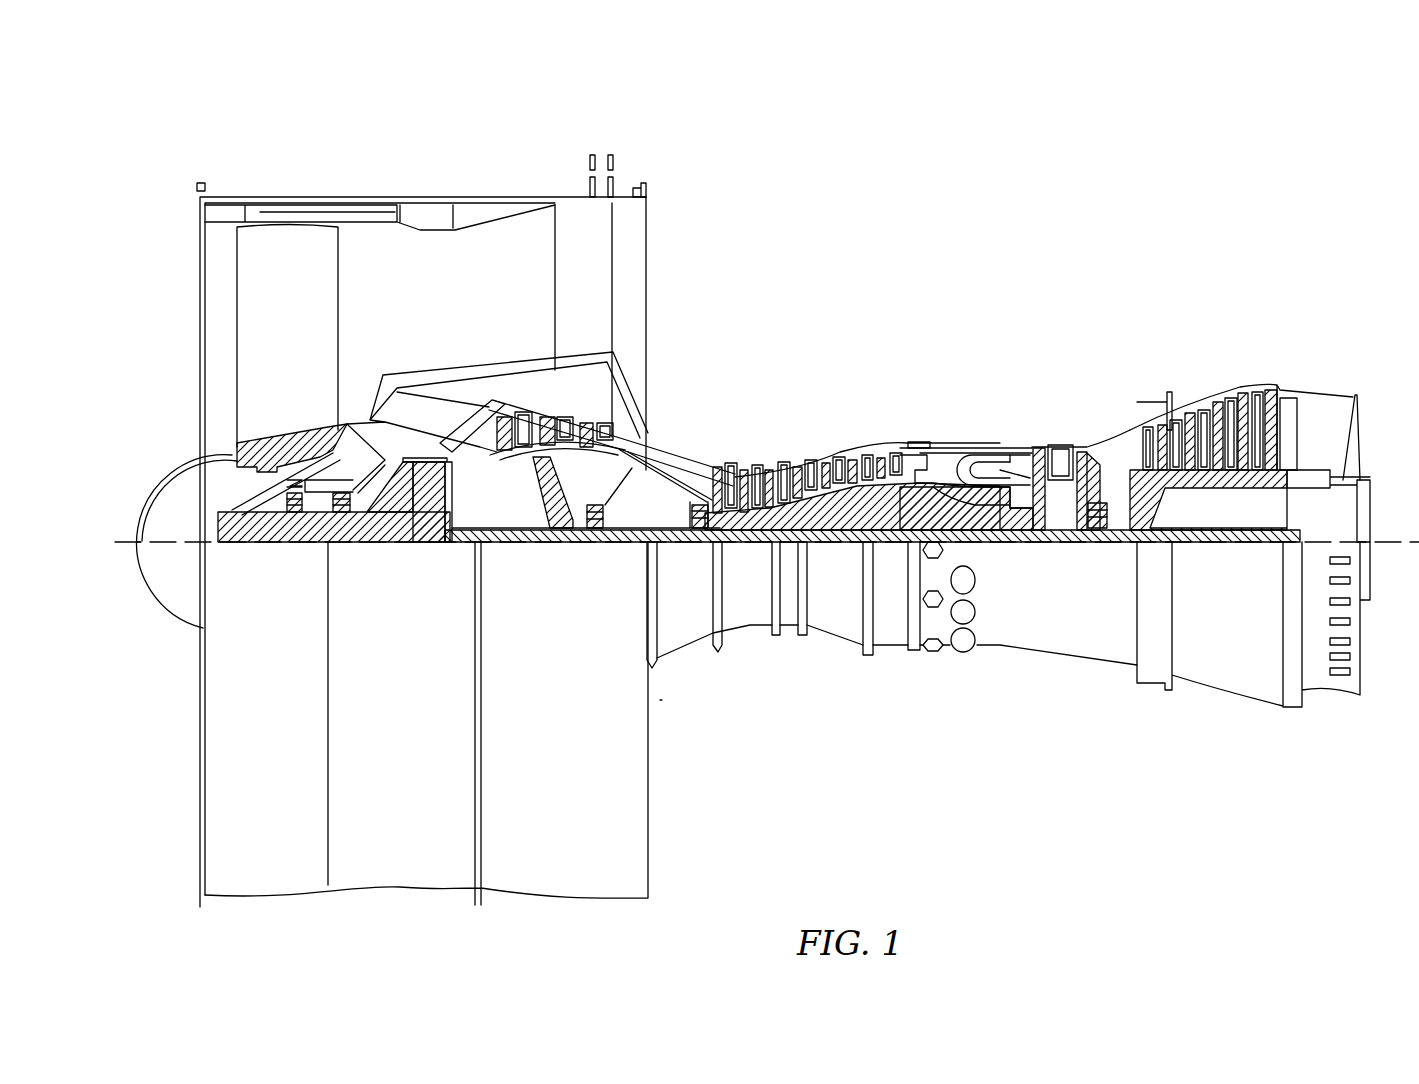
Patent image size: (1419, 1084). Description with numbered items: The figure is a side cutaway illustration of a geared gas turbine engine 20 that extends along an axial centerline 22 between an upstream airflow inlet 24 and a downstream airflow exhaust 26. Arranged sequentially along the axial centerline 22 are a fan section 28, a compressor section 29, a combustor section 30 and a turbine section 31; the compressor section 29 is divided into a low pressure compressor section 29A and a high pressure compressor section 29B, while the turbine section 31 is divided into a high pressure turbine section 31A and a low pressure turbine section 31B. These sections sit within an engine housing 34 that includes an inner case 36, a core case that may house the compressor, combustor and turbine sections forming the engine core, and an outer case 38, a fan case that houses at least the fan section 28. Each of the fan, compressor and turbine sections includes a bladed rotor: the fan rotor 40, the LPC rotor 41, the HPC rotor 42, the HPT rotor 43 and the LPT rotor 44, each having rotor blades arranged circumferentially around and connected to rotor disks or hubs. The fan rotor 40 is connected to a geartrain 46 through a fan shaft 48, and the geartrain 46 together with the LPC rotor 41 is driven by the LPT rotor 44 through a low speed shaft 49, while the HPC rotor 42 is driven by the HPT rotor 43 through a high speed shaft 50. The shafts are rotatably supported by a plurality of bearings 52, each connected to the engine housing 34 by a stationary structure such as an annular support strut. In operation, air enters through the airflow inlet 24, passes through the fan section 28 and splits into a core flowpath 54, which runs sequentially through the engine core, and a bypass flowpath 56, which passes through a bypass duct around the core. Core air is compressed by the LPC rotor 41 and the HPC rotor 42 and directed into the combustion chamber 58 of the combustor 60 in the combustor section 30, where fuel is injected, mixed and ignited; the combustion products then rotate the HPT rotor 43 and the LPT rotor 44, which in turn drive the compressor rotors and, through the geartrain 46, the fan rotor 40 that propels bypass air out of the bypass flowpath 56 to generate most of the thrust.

The gas turbine engine 20 is at (150, 198).
The axial centerline 22 is at (1418, 568).
The airflow inlet 24 is at (200, 283).
The airflow exhaust 26 is at (1360, 428).
The fan section 28 is at (205, 165).
The compressor section 29 is at (468, 101).
The low pressure compressor (LPC) section 29A is at (648, 151).
The high pressure compressor (HPC) section 29B is at (890, 356).
The combustor section 30 is at (1025, 356).
The turbine section 31 is at (1315, 278).
The high pressure turbine (HPT) section 31A is at (1110, 356).
The low pressure turbine (LPT) section 31B is at (1315, 356).
The engine housing 34 is at (677, 672).
The inner case 36 is at (890, 650).
The outer case 38 is at (598, 905).
The fan rotor 40 is at (237, 458).
The LPC rotor 41 is at (548, 518).
The HPC rotor 42 is at (835, 543).
The HPT rotor 43 is at (1055, 525).
The LPT rotor 44 is at (1245, 543).
The geartrain 46 is at (432, 543).
The fan shaft 48 is at (273, 545).
The low speed shaft 49 is at (1228, 543).
The high speed shaft 50 is at (1000, 543).
The bearings 52 is at (333, 543).
The core flowpath 54 is at (672, 462).
The bypass flowpath 56 is at (452, 305).
The combustion chamber 58 is at (975, 462).
The combustor 60 is at (1008, 447).